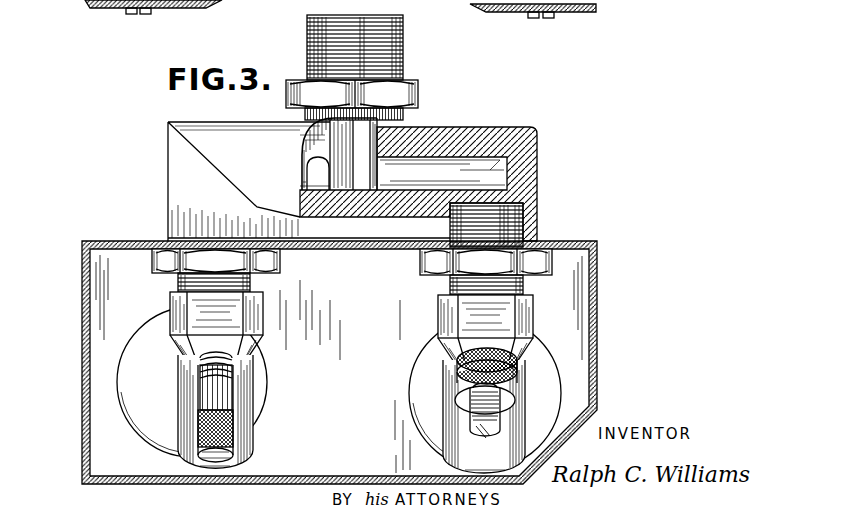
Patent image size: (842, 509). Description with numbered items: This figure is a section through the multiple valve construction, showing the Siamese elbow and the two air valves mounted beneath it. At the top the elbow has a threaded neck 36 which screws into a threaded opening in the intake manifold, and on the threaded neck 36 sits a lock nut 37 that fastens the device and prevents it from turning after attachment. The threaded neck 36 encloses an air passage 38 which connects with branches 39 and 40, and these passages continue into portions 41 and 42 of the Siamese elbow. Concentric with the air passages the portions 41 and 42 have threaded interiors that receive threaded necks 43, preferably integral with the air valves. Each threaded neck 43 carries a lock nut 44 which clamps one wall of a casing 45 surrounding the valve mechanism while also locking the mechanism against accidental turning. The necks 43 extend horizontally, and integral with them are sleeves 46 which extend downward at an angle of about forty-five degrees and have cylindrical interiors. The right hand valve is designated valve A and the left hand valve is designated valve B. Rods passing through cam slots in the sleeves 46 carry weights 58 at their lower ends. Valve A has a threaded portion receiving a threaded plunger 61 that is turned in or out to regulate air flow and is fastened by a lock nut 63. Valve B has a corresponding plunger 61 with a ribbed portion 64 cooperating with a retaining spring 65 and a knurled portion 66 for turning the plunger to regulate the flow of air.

The threaded neck 36 is at (400, 57).
The lock nut 37 is at (418, 93).
The air passage 38 is at (365, 137).
The branch 39 is at (480, 165).
The branch 40 is at (313, 175).
The portion of the Siamese elbow 41 is at (535, 236).
The portion of the Siamese elbow 42 is at (170, 219).
The threaded neck 43 is at (253, 283).
The lock nut 44 is at (172, 262).
The casing 45 is at (82, 397).
The sleeve 46 is at (247, 447).
The weight 58 is at (131, 361).
The threaded plunger 61 is at (470, 408).
The lock nut 63 is at (527, 406).
The ribbed portion 64 is at (223, 395).
The retaining spring 65 is at (197, 388).
The knurled portion 66 is at (237, 435).
The valve A is at (500, 321).
The valve B is at (183, 310).